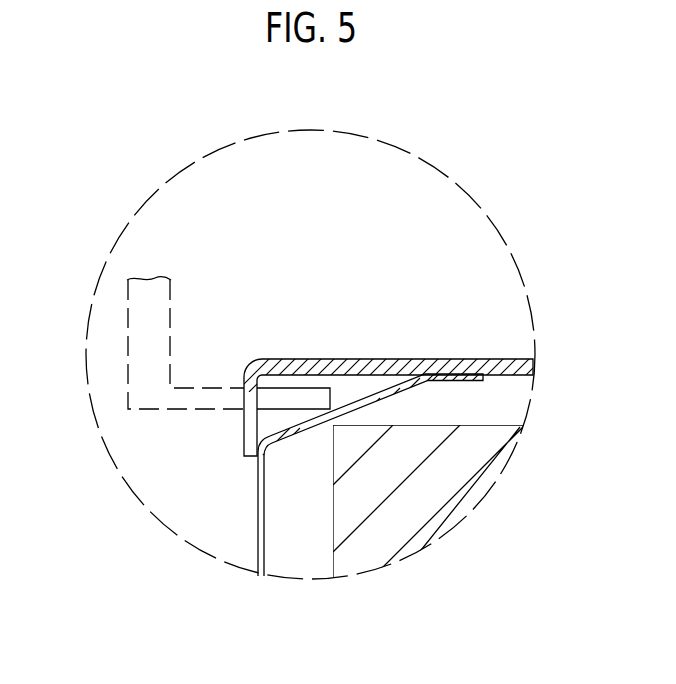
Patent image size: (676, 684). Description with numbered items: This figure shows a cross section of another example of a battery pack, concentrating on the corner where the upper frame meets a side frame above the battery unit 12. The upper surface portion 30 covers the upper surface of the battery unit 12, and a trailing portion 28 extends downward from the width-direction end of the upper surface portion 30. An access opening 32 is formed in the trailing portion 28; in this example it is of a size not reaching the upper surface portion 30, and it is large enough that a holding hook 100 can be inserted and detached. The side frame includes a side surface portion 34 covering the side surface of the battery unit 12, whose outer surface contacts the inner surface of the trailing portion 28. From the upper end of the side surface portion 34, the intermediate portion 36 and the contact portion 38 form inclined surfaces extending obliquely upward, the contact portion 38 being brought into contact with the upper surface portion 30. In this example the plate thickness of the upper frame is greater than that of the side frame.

The battery unit 12 is at (452, 517).
The trailing portion 28 is at (244, 440).
The upper surface portion 30 is at (438, 358).
The access opening 32 is at (244, 390).
The side surface portion 34 is at (258, 546).
The intermediate portion 36 is at (293, 438).
The contact portion 38 is at (392, 388).
The holding hook 100 is at (154, 410).